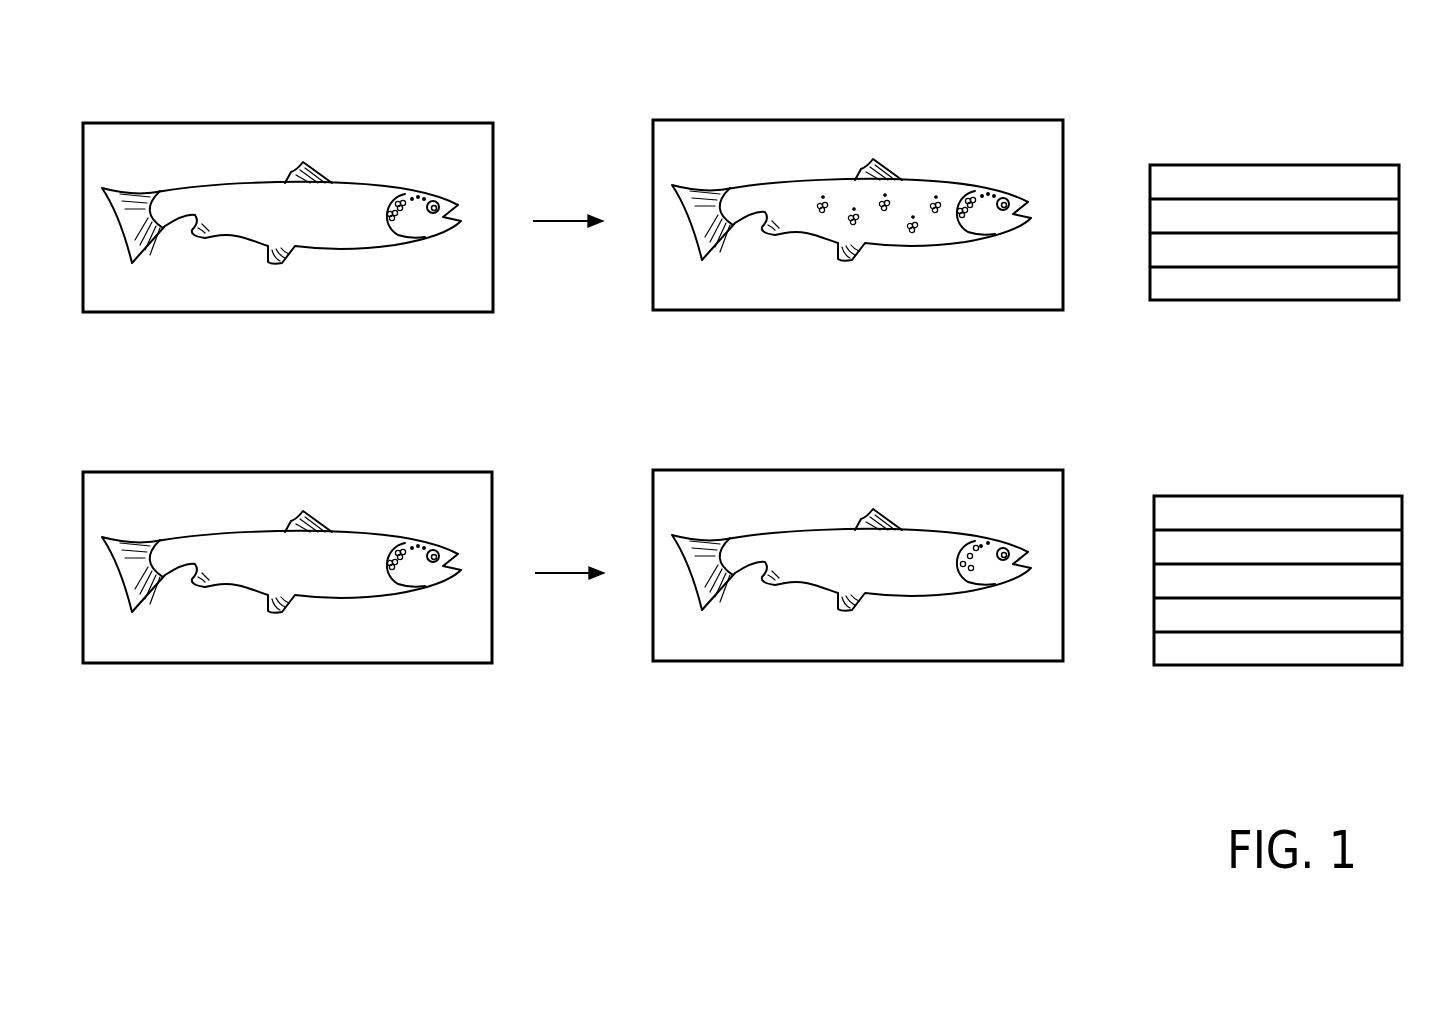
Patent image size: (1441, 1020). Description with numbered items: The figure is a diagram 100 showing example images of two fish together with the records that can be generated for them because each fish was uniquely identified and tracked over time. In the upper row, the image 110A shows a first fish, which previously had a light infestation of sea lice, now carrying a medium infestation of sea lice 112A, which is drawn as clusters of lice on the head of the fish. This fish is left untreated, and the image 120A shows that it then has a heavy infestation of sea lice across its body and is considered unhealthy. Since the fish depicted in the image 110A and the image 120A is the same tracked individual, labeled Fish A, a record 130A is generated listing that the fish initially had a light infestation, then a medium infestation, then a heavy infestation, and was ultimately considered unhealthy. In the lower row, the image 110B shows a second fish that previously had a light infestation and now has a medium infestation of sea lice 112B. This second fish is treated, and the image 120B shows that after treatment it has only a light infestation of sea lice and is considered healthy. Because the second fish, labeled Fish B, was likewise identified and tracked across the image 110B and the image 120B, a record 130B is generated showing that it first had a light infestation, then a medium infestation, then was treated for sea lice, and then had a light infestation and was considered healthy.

The diagram 100 is at (170, 52).
The image 110A is at (296, 221).
The medium infestation of sea lice 112A is at (410, 217).
The image 120A is at (988, 120).
The record 130A is at (1362, 165).
The image 110B is at (296, 572).
The medium infestation of sea lice 112B is at (408, 566).
The image 120B is at (938, 470).
The record 130B is at (1364, 498).